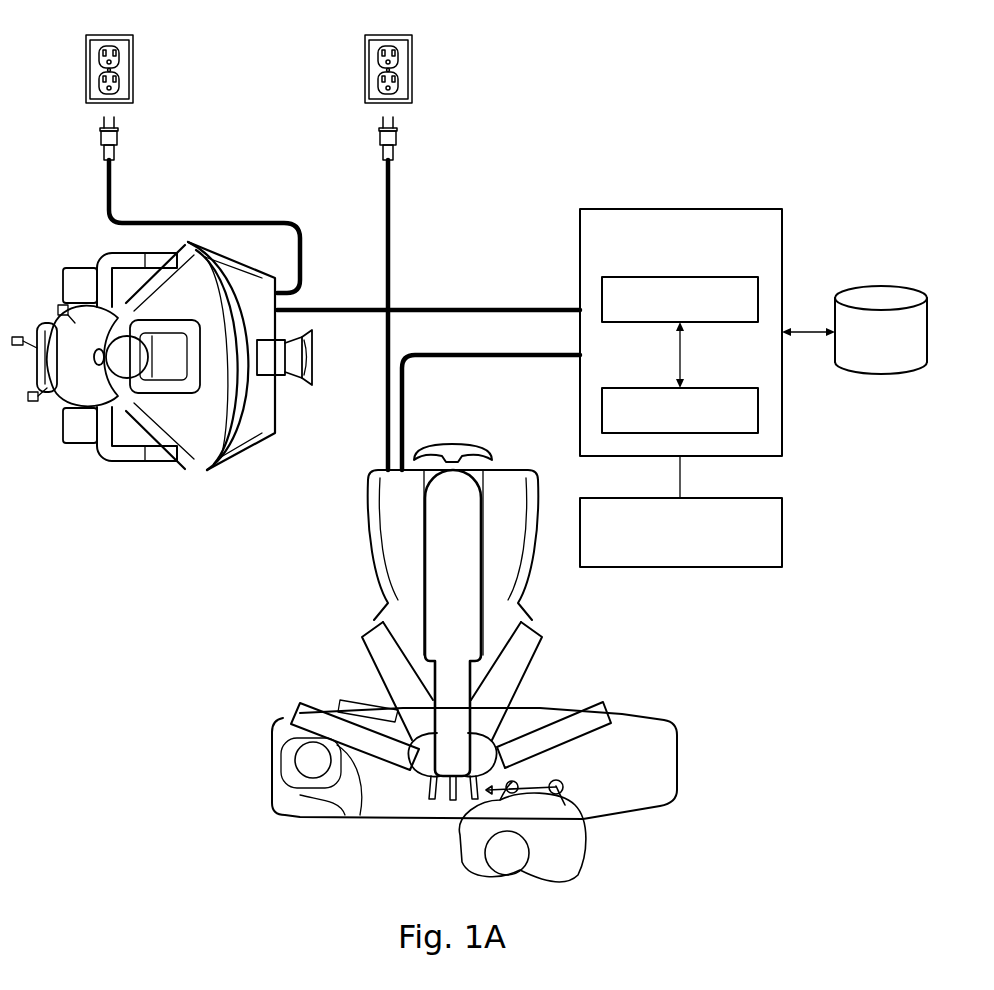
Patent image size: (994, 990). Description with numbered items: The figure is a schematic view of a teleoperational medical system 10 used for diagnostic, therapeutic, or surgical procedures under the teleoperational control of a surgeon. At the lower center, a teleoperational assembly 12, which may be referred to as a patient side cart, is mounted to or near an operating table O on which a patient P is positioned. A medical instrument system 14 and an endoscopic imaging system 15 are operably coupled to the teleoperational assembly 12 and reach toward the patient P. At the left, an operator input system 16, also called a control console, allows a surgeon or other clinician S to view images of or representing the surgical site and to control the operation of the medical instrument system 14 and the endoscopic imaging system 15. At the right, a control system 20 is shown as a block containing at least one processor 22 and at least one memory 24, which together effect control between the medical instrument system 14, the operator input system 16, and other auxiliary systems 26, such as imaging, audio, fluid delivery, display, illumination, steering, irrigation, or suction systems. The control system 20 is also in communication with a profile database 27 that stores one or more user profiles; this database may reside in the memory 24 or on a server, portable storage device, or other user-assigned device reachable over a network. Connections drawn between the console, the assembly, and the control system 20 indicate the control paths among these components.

The teleoperational medical system 10 is at (596, 58).
The teleoperational assembly 12 is at (437, 592).
The medical instrument system 14 is at (514, 755).
The endoscopic imaging system 15 is at (445, 800).
The operator input system 16 is at (253, 452).
The control system 20 is at (718, 200).
The processor 22 is at (692, 277).
The memory 24 is at (700, 388).
The auxiliary systems 26 is at (782, 533).
The profile database 27 is at (866, 353).
The surgeon S is at (50, 321).
The patient P is at (294, 802).
The operating table O is at (618, 830).